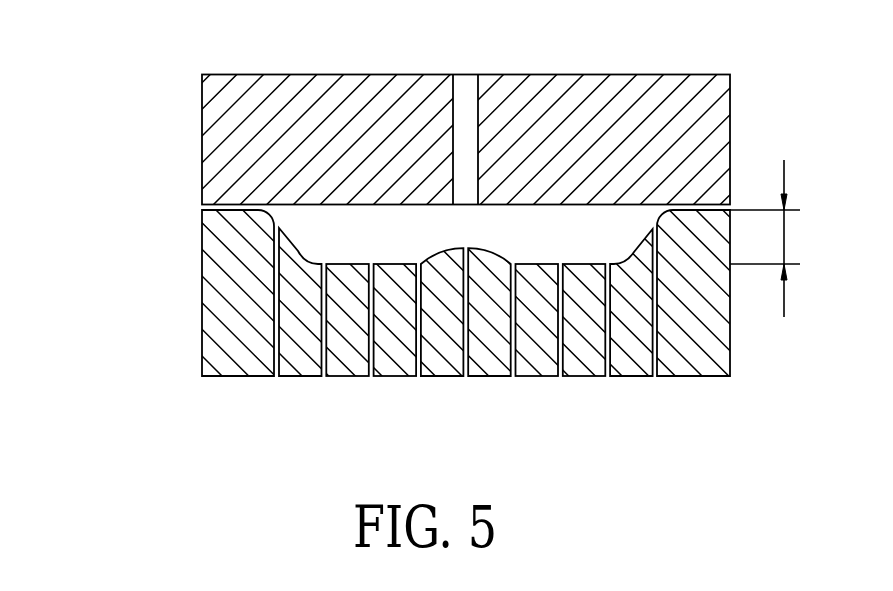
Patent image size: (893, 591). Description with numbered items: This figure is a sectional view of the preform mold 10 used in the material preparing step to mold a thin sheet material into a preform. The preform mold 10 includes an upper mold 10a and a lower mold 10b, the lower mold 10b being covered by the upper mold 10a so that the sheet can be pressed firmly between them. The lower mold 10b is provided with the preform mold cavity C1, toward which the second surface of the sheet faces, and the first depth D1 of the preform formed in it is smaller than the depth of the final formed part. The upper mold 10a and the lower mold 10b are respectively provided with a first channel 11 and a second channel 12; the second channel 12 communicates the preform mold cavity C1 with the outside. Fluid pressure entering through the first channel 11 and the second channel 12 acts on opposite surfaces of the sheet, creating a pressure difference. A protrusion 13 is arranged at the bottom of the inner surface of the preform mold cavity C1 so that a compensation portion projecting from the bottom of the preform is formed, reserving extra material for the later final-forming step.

The preform mold 10 is at (458, 247).
The upper mold 10a is at (232, 127).
The lower mold 10b is at (230, 305).
The first channel 11 is at (470, 85).
The second channel 12 is at (558, 357).
The protrusion 13 is at (452, 251).
The preform mold cavity C1 is at (381, 237).
The first depth D1 is at (767, 217).